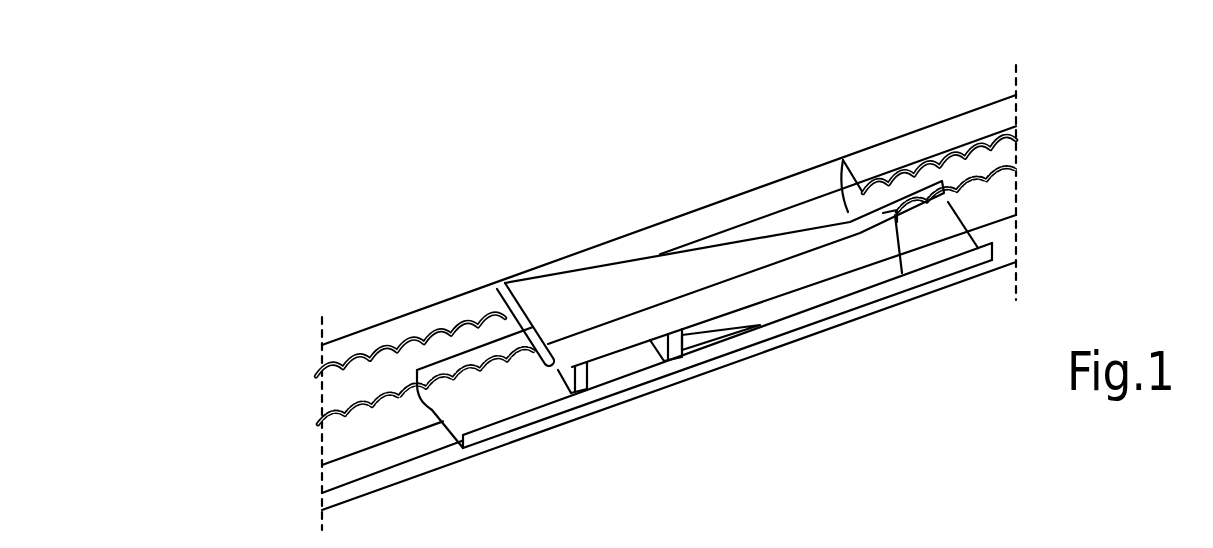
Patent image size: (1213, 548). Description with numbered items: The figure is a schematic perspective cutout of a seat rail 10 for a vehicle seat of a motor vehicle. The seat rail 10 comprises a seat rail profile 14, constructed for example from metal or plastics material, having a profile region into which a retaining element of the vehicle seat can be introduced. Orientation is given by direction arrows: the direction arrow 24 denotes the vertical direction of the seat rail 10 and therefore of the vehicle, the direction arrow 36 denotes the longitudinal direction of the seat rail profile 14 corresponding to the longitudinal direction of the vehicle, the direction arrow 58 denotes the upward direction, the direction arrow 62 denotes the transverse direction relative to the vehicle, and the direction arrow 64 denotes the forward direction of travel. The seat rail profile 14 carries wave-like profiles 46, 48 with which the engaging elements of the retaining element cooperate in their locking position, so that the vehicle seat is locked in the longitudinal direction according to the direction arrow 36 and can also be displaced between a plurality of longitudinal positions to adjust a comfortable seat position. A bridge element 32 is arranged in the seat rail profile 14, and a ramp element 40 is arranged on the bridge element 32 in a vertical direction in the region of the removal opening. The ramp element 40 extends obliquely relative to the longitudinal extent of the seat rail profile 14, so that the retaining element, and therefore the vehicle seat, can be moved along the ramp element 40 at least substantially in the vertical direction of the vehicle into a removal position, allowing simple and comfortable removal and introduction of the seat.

The seat rail 10 is at (812, 438).
The seat rail profile 14 is at (437, 455).
The direction arrow 24 is at (252, 362).
The bridge element 32 is at (527, 425).
The direction arrow 36 is at (725, 380).
The ramp element 40 is at (550, 281).
The wave-like profile 46 is at (326, 394).
The wave-like profile 48 is at (311, 457).
The direction arrow 58 is at (187, 434).
The direction arrow 62 is at (130, 515).
The direction arrow 64 is at (467, 193).